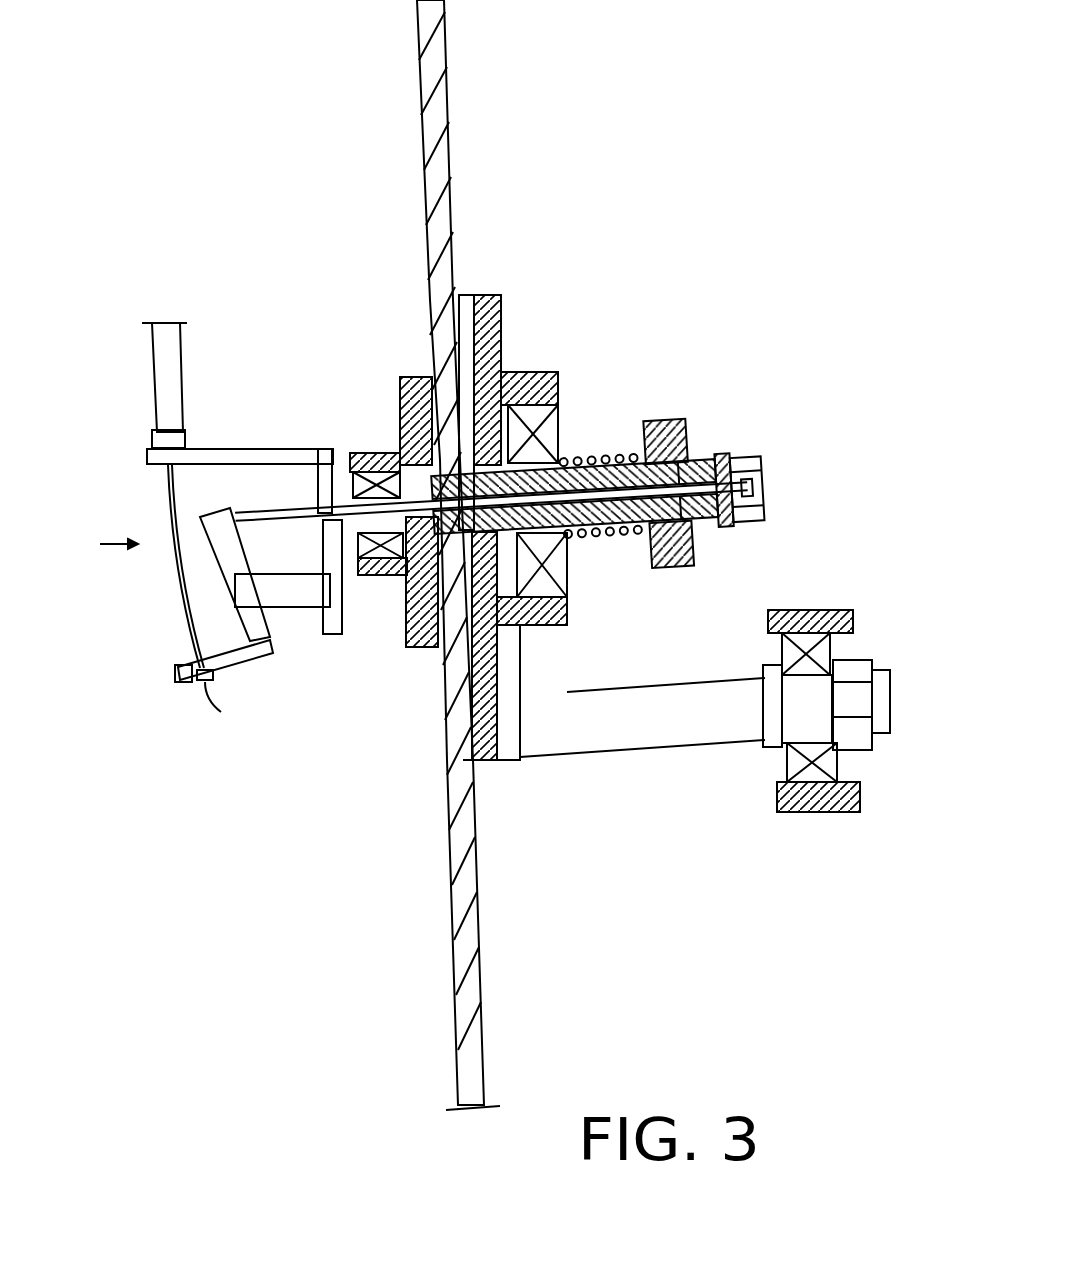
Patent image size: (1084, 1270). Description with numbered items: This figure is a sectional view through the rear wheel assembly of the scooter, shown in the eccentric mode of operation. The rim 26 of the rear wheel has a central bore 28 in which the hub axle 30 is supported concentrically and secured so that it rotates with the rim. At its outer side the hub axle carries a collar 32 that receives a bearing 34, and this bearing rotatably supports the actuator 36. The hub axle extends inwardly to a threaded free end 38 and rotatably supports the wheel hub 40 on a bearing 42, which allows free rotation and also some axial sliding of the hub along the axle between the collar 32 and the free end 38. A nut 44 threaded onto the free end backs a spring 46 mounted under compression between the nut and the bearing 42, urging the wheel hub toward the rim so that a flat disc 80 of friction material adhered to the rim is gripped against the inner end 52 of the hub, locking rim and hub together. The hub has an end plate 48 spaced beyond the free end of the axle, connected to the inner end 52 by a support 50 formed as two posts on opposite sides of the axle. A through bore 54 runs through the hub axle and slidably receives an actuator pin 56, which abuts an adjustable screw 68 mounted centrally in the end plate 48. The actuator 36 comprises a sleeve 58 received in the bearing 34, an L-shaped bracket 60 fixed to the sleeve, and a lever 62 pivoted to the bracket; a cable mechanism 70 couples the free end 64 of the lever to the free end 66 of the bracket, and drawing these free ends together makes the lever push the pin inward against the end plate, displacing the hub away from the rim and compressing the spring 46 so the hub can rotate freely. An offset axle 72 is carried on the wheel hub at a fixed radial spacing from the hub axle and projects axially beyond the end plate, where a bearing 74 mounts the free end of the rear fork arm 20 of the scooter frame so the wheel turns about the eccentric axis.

The rear fork arm 20 is at (852, 746).
The rim 26 is at (441, 45).
The central bore 28 is at (480, 463).
The hub axle 30 is at (600, 460).
The collar 32 is at (373, 457).
The bearing 34 is at (352, 492).
The actuator 36 is at (94, 551).
The free end 38 is at (712, 455).
The wheel hub 40 is at (522, 668).
The bearing 42 is at (536, 418).
The nut 44 is at (680, 423).
The spring 46 is at (585, 533).
The end plate 48 is at (747, 455).
The support 50 is at (703, 520).
The inner end 52 is at (467, 660).
The through bore 54 is at (615, 532).
The actuator pin 56 is at (673, 568).
The sleeve 58 is at (348, 495).
The L-shaped bracket 60 is at (233, 457).
The lever 62 is at (277, 640).
The free end 64 is at (182, 663).
The free end 66 is at (147, 460).
The adjustable screw 68 is at (752, 488).
The cable mechanism 70 is at (178, 565).
The offset axle 72 is at (650, 742).
The bearing 74 is at (830, 812).
The flat disc 80 is at (478, 773).